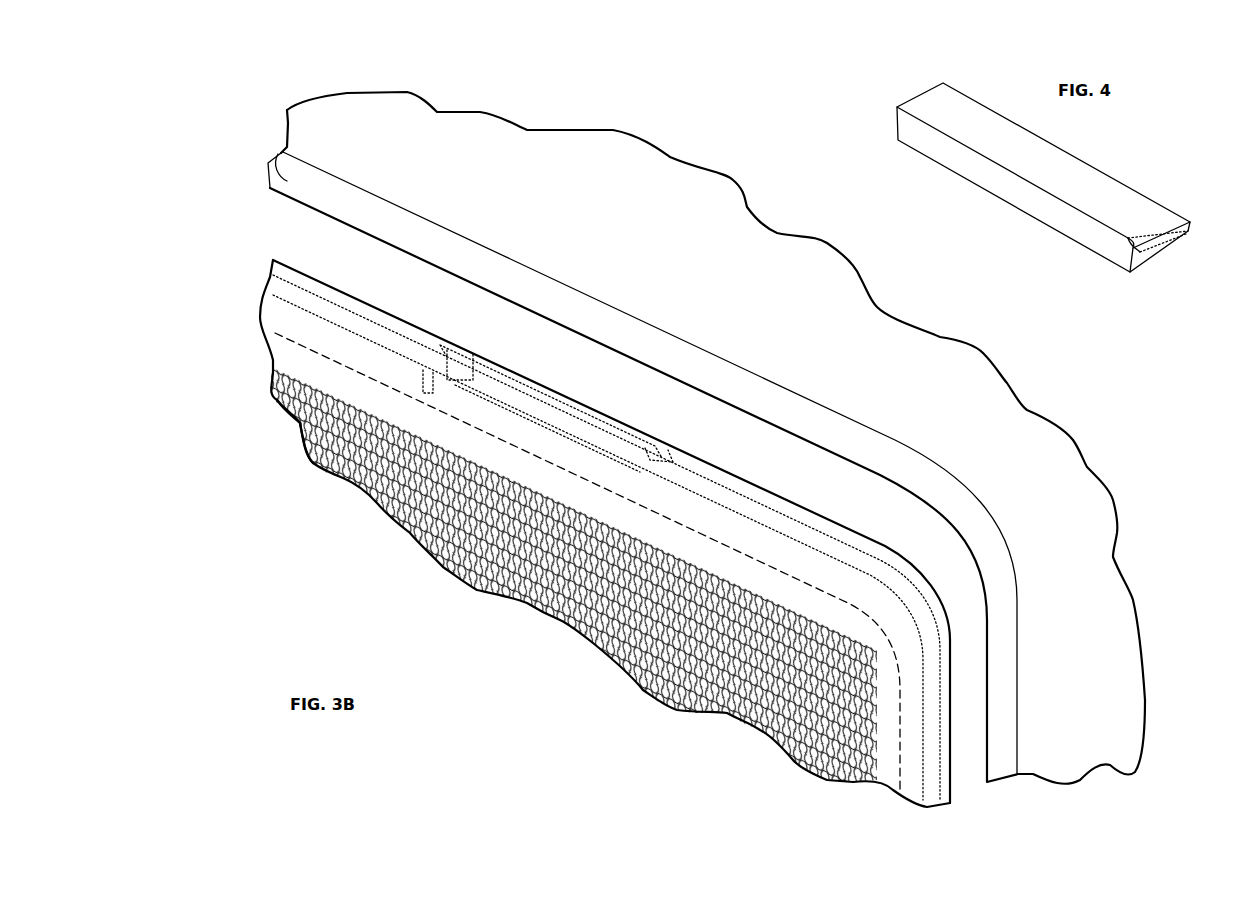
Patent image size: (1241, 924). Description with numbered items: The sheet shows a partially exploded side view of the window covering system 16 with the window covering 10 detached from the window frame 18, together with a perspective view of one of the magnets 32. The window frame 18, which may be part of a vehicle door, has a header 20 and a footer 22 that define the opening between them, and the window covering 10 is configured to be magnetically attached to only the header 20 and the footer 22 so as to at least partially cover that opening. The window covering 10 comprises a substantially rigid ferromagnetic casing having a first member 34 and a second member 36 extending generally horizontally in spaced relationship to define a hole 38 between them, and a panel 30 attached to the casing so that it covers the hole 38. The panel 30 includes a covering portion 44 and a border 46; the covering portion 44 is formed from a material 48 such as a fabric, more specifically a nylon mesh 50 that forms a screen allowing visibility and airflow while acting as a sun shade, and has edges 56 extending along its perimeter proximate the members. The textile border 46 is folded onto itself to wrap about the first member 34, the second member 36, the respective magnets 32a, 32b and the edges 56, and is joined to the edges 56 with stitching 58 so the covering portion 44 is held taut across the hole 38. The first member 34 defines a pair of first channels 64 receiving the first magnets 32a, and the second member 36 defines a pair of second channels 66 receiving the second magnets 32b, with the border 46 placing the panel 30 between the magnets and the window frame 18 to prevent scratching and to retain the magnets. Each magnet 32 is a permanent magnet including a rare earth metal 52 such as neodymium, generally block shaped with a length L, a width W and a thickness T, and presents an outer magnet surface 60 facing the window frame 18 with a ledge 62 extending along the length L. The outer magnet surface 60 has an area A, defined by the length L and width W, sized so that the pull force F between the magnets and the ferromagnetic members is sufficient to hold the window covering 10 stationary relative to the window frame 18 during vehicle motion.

In FIG. 3B, the window covering 10 is at (255, 250).
In FIG. 3B, the window covering system 16 is at (890, 301).
In FIG. 3B, the window frame 18 is at (287, 180).
In FIG. 3B, the header 20 is at (623, 446).
In FIG. 3B, the footer 22 is at (623, 446).
In FIG. 3B, the panel 30 is at (610, 594).
In FIG. 4, the magnets 32 is at (905, 90).
In FIG. 3B, the first magnets 32a is at (431, 337).
In FIG. 3B, the second magnets 32b is at (450, 373).
In FIG. 3B, the first member 34 is at (611, 531).
In FIG. 3B, the second member 36 is at (813, 543).
In FIG. 3B, the hole 38 is at (829, 752).
In FIG. 3B, the covering portion 44 is at (370, 473).
In FIG. 3B, the border 46 is at (277, 318).
In FIG. 3B, the material 48 is at (443, 550).
In FIG. 3B, the nylon mesh 50 is at (313, 430).
In FIG. 4, the rare earth metal 52 is at (1036, 153).
In FIG. 3B, the edges 56 is at (270, 370).
In FIG. 3B, the stitching 58 is at (289, 343).
In FIG. 4, the outer magnet surface 60 is at (1037, 147).
In FIG. 4, the ledge 62 is at (1133, 248).
In FIG. 3B, the first channels 64 is at (572, 376).
In FIG. 3B, the second channels 66 is at (572, 376).
In FIG. 3B, the pull force F is at (582, 394).
In FIG. 4, the width W is at (850, 108).
In FIG. 4, the area A is at (973, 117).
In FIG. 4, the length L is at (1133, 300).
In FIG. 4, the thickness T is at (1198, 262).